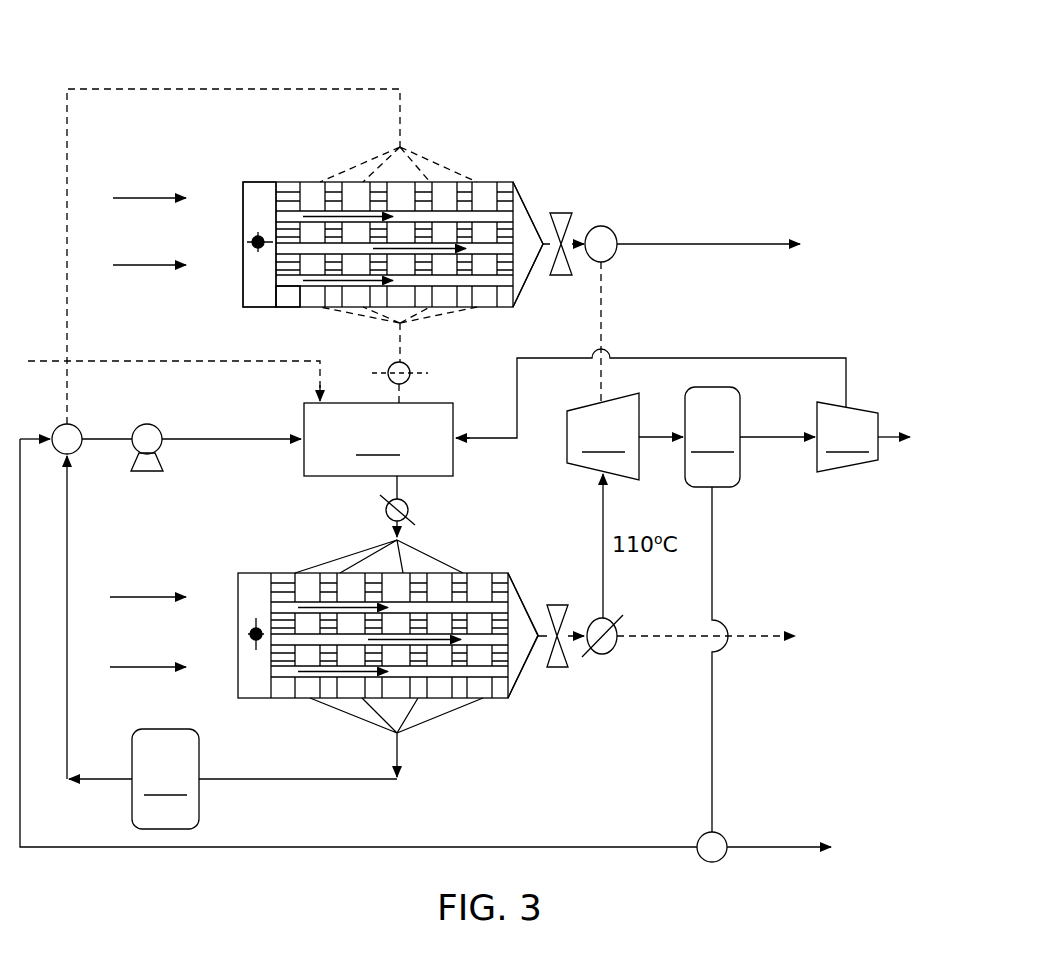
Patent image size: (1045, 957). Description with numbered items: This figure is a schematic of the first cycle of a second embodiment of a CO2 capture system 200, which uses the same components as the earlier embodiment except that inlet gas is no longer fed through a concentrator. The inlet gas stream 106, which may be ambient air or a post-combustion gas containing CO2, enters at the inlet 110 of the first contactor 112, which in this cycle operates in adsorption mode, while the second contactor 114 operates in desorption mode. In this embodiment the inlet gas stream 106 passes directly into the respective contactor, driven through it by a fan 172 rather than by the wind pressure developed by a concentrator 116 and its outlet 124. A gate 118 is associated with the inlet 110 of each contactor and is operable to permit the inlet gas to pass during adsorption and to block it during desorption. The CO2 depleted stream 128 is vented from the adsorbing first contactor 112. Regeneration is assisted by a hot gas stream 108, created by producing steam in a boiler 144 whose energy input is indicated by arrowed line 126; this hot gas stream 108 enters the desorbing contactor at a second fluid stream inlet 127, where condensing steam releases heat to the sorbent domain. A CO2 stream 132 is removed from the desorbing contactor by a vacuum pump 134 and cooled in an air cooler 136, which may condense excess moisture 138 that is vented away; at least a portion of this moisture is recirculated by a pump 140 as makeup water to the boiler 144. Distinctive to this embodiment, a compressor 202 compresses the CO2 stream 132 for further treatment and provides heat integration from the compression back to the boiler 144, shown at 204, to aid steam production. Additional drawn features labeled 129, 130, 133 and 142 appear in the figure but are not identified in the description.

The CO2 capture system 200 is at (412, 48).
The compressor 202 is at (672, 136).
The inlet gas stream 106 is at (168, 276).
The hot gas stream 108 is at (232, 437).
The inlet 110 is at (275, 197).
The first contactor 112 is at (499, 158).
The second contactor 114 is at (470, 536).
The concentrator 116 is at (231, 166).
The gate 118 is at (252, 242).
The outlet 124 is at (289, 291).
The energy input 126 is at (90, 360).
The second fluid stream inlet 127 is at (324, 555).
The CO2 depleted stream 128 is at (706, 240).
The outlet nozzle 129 is at (525, 297).
The outlet stream 130 is at (400, 754).
The CO2 stream 132 is at (781, 435).
The outlet nozzle 133 is at (522, 689).
The vacuum pump 134 is at (625, 436).
The air cooler 136 is at (712, 437).
The excess moisture 138 is at (712, 712).
The pump 140 is at (133, 424).
The heat exchanger 142 is at (134, 779).
The boiler 144 is at (378, 449).
The fan 172 is at (560, 278).
The heat integration path 204 is at (750, 358).